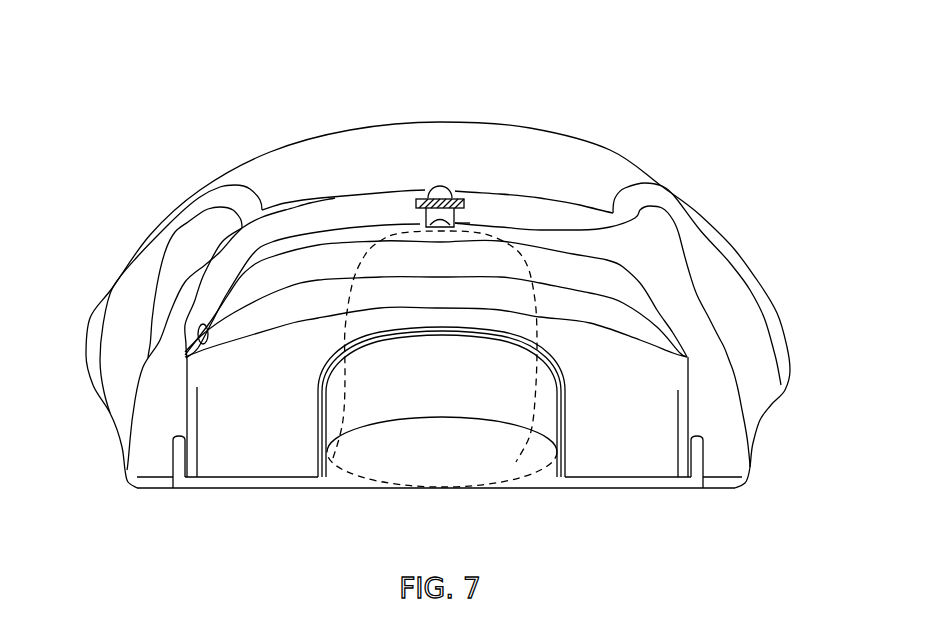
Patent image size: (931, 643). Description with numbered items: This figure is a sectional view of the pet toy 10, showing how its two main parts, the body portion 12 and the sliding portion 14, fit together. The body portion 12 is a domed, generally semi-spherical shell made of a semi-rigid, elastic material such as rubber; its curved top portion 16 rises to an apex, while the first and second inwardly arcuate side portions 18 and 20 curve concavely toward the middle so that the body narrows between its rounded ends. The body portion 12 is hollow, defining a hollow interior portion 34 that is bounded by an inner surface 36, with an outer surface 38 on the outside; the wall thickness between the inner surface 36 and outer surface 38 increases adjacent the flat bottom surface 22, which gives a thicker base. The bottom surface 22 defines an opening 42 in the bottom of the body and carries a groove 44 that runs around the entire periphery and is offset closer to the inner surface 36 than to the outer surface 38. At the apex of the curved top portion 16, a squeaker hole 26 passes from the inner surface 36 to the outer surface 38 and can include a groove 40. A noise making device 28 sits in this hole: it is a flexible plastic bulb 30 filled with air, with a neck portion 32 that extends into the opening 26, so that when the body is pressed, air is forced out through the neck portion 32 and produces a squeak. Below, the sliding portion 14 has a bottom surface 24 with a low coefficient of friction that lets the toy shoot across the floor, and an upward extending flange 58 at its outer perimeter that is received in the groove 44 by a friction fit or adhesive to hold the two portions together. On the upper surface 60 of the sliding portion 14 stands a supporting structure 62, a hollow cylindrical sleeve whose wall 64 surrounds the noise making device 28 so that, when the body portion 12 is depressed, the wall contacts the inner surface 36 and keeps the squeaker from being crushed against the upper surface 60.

The pet toy 10 is at (476, 256).
The body portion 12 is at (790, 378).
The sliding portion 14 is at (268, 489).
The curved top portion 16 is at (403, 193).
The first inwardly arcuate side portion 18 is at (743, 320).
The second inwardly arcuate side portion 20 is at (113, 383).
The bottom surface 22 is at (730, 490).
The bottom surface of the sliding portion 24 is at (652, 489).
The opening or hole 26 is at (457, 194).
The noise making device 28 is at (533, 277).
The bulb 30 is at (497, 486).
The neck portion 32 is at (472, 210).
The hollow interior portion 34 is at (233, 287).
The inner surface 36 is at (197, 338).
The outer surface 38 is at (400, 137).
The groove 40 is at (417, 198).
The opening 42 is at (236, 480).
The groove 44 is at (703, 466).
The flange 58 is at (168, 462).
The upper surface 60 is at (237, 434).
The supporting structure 62 is at (331, 458).
The wall 64 is at (565, 437).